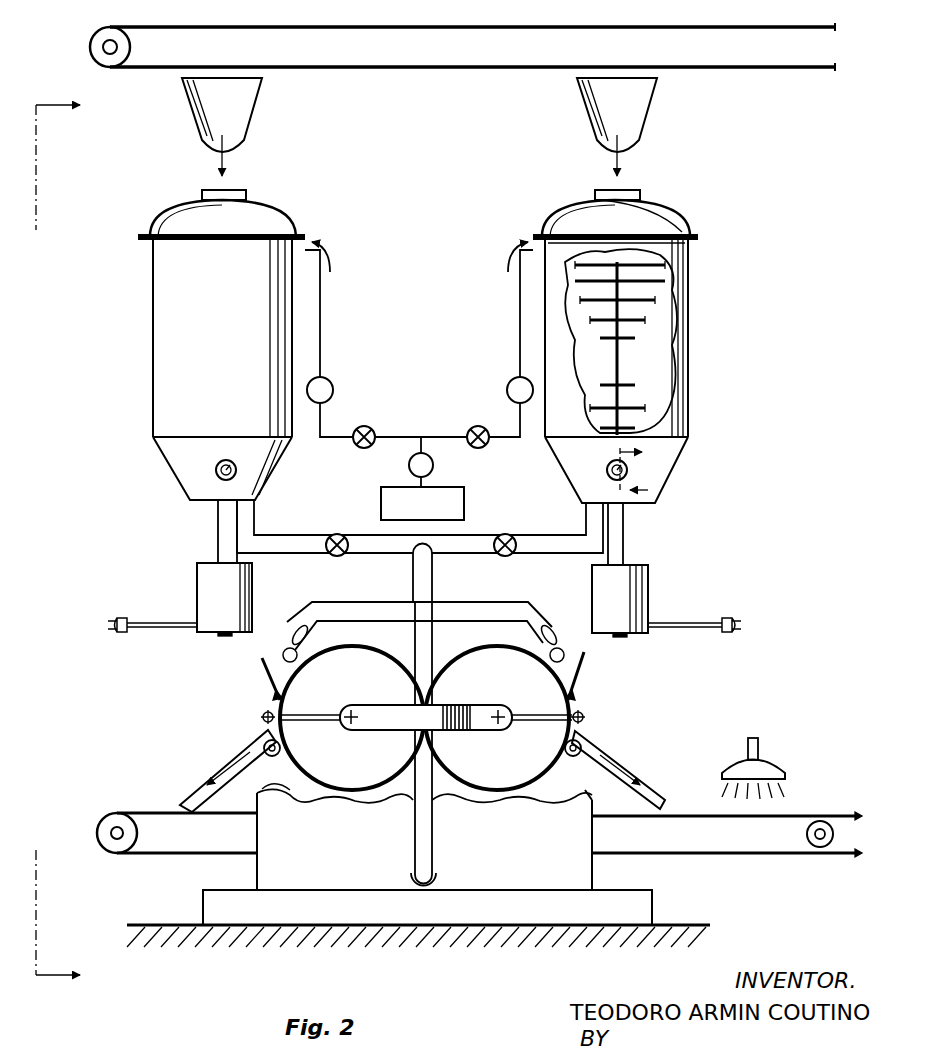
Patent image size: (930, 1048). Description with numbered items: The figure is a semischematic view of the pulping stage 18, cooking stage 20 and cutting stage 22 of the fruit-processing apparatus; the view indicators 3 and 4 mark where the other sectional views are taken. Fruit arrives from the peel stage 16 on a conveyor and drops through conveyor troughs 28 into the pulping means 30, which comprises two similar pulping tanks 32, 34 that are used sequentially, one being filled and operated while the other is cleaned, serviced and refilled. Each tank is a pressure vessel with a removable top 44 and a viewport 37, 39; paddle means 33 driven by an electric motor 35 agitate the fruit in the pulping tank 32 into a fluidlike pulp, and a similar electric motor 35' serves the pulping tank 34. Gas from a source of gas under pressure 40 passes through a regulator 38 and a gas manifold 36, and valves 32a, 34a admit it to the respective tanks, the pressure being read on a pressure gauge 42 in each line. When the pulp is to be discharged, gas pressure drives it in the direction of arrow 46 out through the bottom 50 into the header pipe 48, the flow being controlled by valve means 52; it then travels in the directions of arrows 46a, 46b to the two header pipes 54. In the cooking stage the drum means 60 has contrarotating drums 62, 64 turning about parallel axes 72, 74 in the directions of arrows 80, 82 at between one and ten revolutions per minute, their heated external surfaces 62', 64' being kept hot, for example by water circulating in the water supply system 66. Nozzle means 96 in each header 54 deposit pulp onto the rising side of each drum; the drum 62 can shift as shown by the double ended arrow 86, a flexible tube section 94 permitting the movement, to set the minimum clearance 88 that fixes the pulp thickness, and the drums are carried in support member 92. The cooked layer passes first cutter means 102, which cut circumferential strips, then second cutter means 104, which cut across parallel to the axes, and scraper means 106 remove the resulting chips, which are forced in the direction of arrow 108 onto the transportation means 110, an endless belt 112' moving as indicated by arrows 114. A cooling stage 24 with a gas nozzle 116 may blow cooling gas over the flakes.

The section line 3- 3 is at (70, 542).
The section line 4- 4 is at (642, 475).
The peel stage 16 is at (462, 35).
The pulping stage 18 is at (788, 194).
The cooking stage 20 is at (441, 649).
The cutting stage 22 is at (636, 704).
The cooling stage 24 is at (753, 728).
The conveyor troughs 28 is at (250, 114).
The pulping means 30 is at (747, 302).
The pulping tank 32 is at (688, 278).
The valve 32a is at (483, 424).
The paddle means 33 is at (620, 374).
The pulping tank 34 is at (152, 298).
The valve 34a is at (372, 424).
The electric motor 35 is at (666, 570).
The electric motor 35' is at (180, 568).
The gas manifold 36 is at (399, 437).
The viewport 37 is at (628, 472).
The regulator 38 is at (433, 467).
The viewport 39 is at (216, 470).
The source of gas under pressure 40 is at (464, 493).
The pressure gauge 42 is at (326, 381).
The removable top 44 is at (660, 202).
The arrow 46 is at (707, 360).
The arrow 46a is at (490, 528).
The arrow 46b is at (438, 590).
The header pipe 48 is at (568, 555).
The bottom 50 is at (645, 507).
The valve means 52 is at (337, 534).
The header pipes 54 is at (289, 650).
The drum means 60 is at (584, 819).
The drum 62 is at (497, 710).
The heated external surface 62' is at (512, 816).
The drum 64 is at (352, 710).
The heated external surface 64' is at (335, 810).
The water supply system 66 is at (392, 690).
The axis 72 is at (504, 712).
The axis 74 is at (343, 712).
The arrow 80 is at (452, 745).
The arrow 82 is at (395, 745).
The double ended arrow 86 is at (578, 840).
The minimum clearance 88 is at (424, 702).
The support member 92 is at (593, 875).
The flexible tube section 94 is at (458, 705).
The nozzle means 96 is at (299, 630).
The first cutter means 102 is at (296, 784).
The second cutter means 104 is at (263, 717).
The scraper means 106 is at (268, 679).
The arrow 108 is at (222, 762).
The transportation means 110 is at (125, 865).
The endless belt 112' is at (517, 851).
The arrows 114 is at (165, 807).
The gas nozzle 116 is at (773, 763).